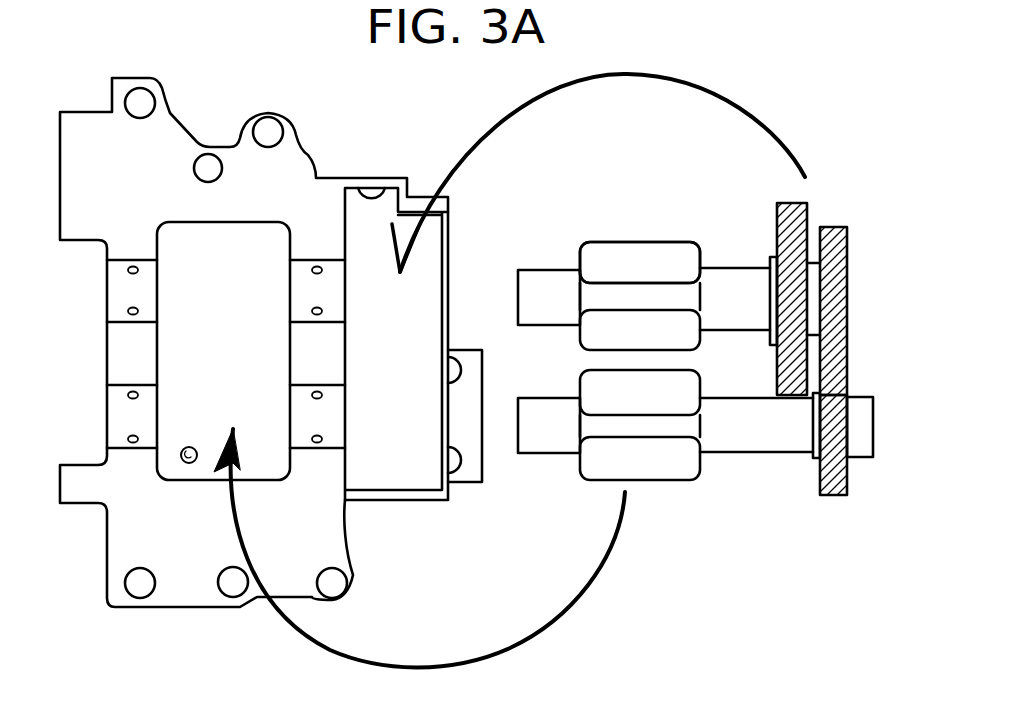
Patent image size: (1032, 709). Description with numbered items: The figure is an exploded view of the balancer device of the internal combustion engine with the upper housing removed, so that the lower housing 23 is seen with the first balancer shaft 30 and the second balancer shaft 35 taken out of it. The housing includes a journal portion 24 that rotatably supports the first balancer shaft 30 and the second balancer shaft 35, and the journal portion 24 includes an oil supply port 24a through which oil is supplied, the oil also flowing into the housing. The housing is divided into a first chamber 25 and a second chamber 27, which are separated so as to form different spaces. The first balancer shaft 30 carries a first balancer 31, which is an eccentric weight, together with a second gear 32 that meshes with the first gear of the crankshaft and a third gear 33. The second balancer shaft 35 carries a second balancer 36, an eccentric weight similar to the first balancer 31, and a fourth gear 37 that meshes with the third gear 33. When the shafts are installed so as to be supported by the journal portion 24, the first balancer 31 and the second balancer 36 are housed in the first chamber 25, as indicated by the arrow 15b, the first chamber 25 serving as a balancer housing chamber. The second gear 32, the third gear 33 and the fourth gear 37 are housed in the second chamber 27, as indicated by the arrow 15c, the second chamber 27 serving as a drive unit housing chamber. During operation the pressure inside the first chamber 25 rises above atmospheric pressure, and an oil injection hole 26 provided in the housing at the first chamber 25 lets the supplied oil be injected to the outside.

The lower housing 23 is at (128, 607).
The journal portion 24 is at (128, 291).
The oil supply port 24a is at (128, 270).
The first chamber 25 is at (233, 246).
The oil injection hole 26 is at (186, 460).
The second chamber 27 is at (362, 188).
The first balancer shaft 30 is at (676, 215).
The first balancer 31 is at (585, 242).
The second gear 32 is at (808, 203).
The third gear 33 is at (847, 227).
The second balancer shaft 35 is at (735, 478).
The second balancer 36 is at (582, 482).
The fourth gear 37 is at (847, 487).
The arrow 15b is at (554, 628).
The arrow 15c is at (590, 78).